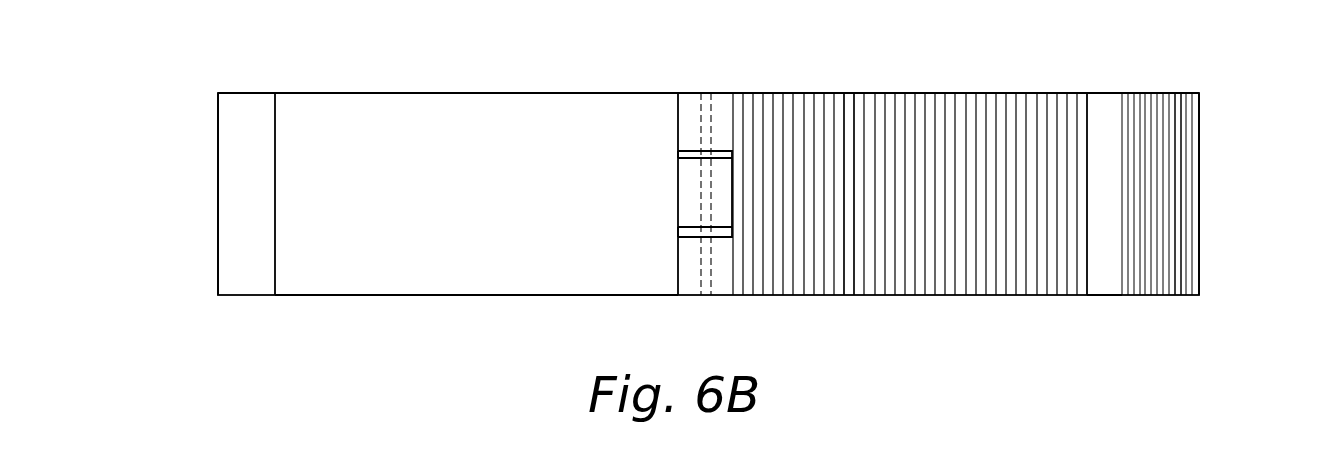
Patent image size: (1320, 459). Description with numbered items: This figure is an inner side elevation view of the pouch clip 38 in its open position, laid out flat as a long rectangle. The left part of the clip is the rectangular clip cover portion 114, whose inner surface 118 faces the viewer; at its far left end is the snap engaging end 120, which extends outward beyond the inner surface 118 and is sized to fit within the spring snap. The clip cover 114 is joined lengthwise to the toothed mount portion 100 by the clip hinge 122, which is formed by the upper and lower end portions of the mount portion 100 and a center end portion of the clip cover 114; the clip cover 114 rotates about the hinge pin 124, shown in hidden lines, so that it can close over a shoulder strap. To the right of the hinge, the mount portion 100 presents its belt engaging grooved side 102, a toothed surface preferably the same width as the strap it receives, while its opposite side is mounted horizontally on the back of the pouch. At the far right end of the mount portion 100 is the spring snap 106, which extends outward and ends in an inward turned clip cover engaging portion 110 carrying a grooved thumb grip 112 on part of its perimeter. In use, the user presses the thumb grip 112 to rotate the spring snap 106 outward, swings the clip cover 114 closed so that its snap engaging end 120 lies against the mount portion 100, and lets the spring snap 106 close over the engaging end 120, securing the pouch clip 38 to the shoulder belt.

The pouch clip 38 is at (397, 63).
The toothed mount portion 100 is at (968, 92).
The belt engaging grooved side 102 is at (849, 105).
The spring snap 106 is at (1162, 95).
The clip cover engaging portion 110 is at (1103, 115).
The grooved thumb grip 112 is at (1182, 153).
The clip cover portion 114 is at (513, 93).
The inner surface 118 is at (480, 207).
The snap engaging end 120 is at (253, 107).
The clip hinge 122 is at (723, 130).
The hinge pin 124 is at (703, 110).